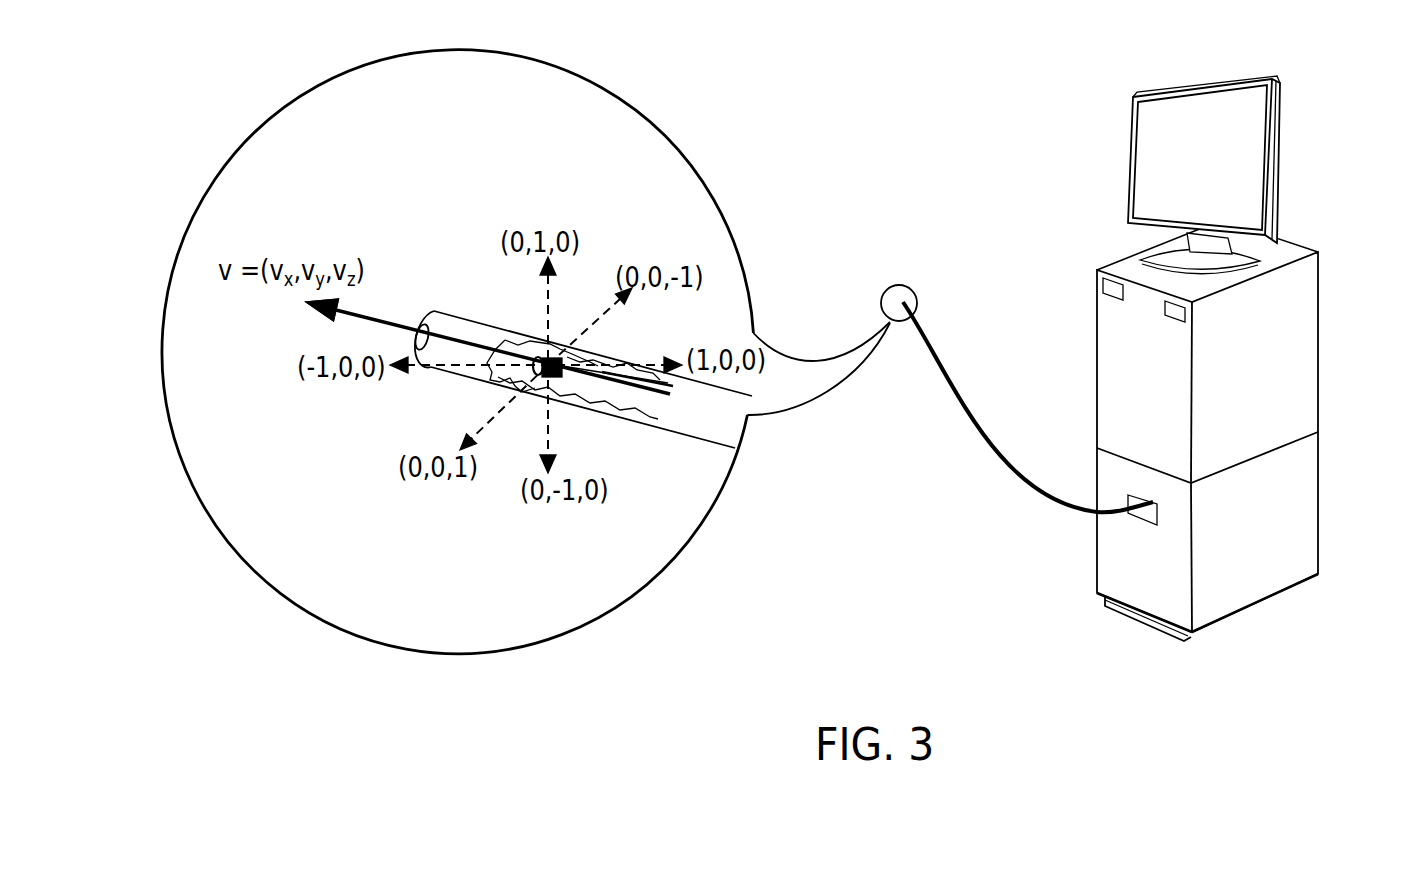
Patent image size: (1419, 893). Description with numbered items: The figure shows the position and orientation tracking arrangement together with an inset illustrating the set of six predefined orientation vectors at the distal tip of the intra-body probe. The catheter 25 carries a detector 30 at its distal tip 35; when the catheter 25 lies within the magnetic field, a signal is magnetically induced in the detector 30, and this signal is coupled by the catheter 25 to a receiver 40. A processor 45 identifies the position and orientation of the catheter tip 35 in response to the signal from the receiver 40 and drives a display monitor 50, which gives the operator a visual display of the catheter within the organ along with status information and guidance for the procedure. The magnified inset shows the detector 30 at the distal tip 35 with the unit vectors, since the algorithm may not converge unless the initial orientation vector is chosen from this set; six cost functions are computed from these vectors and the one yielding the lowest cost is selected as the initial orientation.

The catheter 25 is at (1011, 472).
The detector 30 is at (553, 377).
The distal tip 35 is at (434, 311).
The receiver 40 is at (1320, 457).
The processor 45 is at (1320, 392).
The display monitor 50 is at (1132, 172).